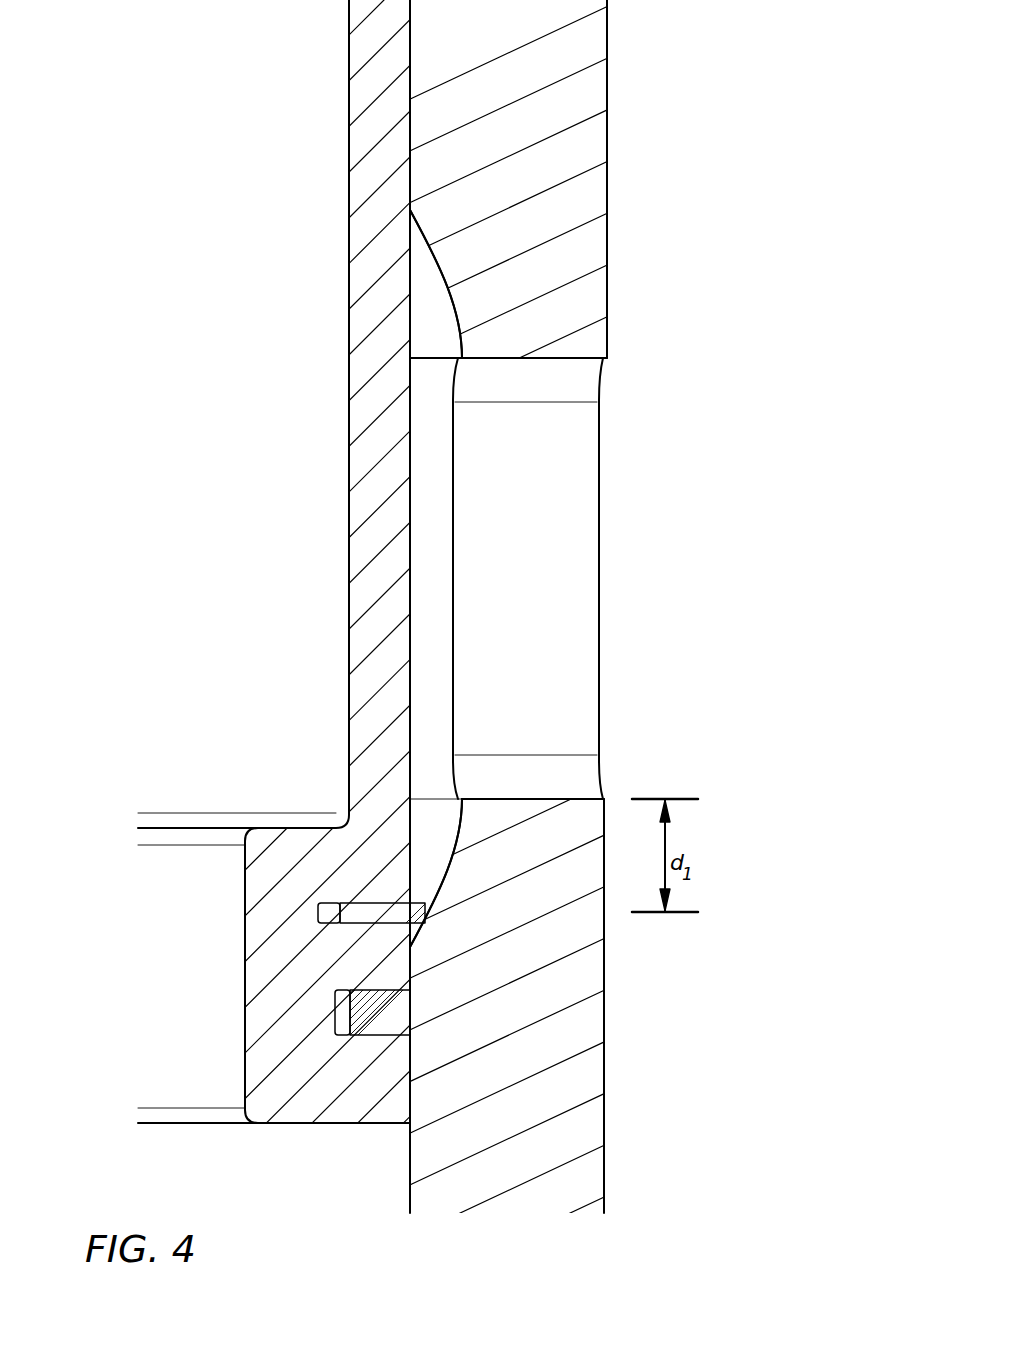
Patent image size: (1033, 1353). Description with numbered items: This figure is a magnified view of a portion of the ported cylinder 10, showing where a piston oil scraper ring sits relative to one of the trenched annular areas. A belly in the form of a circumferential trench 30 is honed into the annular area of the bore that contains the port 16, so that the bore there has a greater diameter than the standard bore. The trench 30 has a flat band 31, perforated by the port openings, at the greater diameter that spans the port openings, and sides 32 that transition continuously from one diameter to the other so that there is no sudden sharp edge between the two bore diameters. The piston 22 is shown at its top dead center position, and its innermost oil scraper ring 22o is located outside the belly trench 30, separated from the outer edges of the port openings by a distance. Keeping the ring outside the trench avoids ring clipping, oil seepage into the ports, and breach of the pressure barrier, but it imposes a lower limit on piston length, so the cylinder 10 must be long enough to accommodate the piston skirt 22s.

The cylinder 10 is at (607, 143).
The port 16 is at (642, 536).
The piston 22 is at (349, 100).
The piston skirt 22s is at (410, 688).
The innermost oil scraper ring 22o is at (428, 893).
The circumferential trench 30 is at (440, 388).
The flat band 31 is at (453, 640).
The sides 32 is at (433, 290).